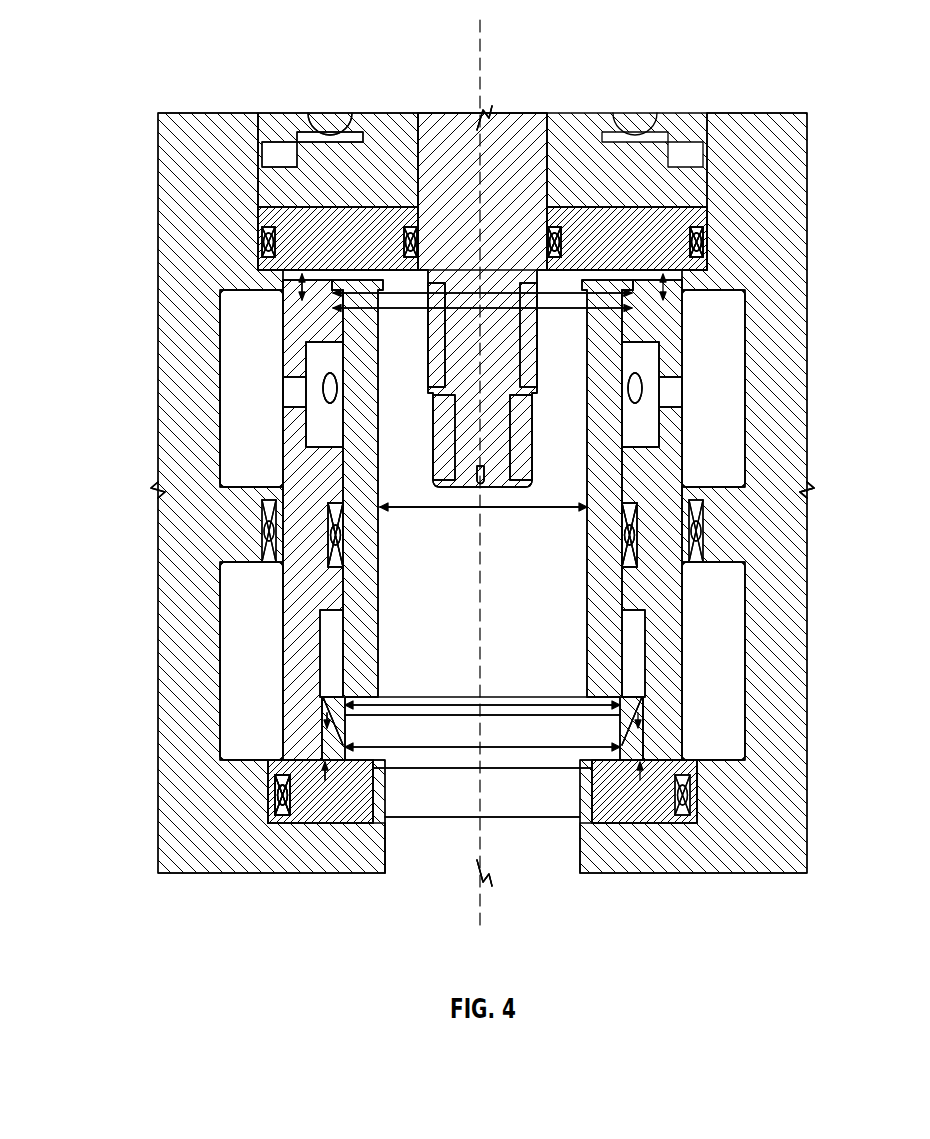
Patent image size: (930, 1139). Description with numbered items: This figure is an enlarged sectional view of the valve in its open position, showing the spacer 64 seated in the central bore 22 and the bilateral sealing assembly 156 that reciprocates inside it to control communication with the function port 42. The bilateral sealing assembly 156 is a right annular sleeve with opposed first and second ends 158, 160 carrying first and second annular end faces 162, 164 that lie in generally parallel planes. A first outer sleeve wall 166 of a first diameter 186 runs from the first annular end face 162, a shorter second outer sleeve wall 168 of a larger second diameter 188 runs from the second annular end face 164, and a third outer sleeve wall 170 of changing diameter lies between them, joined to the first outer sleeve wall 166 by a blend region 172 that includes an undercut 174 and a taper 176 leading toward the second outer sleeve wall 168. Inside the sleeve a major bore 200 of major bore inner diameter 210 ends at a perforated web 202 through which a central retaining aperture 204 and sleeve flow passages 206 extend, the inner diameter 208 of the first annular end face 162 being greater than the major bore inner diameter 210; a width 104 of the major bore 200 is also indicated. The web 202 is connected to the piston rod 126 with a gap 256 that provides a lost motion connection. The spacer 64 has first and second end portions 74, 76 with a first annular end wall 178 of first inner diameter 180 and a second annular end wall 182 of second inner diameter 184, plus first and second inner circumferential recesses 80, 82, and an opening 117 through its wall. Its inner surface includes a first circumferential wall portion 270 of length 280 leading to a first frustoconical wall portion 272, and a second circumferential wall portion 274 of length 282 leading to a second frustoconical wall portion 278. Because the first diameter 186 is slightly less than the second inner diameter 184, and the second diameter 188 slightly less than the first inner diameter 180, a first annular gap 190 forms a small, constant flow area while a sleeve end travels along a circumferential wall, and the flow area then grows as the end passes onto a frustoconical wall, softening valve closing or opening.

The central bore 22 is at (553, 745).
The function port 42 is at (520, 858).
The spacer 64 is at (352, 795).
The first end portion 74 is at (300, 280).
The second end portion 76 is at (368, 835).
The first inner circumferential recess 80 is at (318, 715).
The second inner circumferential recess 82 is at (325, 430).
The chamber diameter 104 is at (460, 508).
The port 117 is at (328, 387).
The piston rod 126 is at (628, 378).
The bilateral sealing assembly 156 is at (322, 697).
The first end 158 is at (320, 745).
The second end 160 is at (345, 205).
The first annular end face 162 is at (345, 717).
The second annular end face 164 is at (642, 270).
The first outer sleeve wall 166 is at (640, 706).
The second outer sleeve wall 168 is at (262, 232).
The third outer sleeve wall 170 is at (307, 343).
The blend region 172 is at (657, 346).
The undercut 174 is at (627, 306).
The gap 176 is at (637, 290).
The first annular end wall 178 is at (648, 268).
The first inner diameter 180 is at (417, 305).
The second annular end wall 182 is at (620, 712).
The second inner diameter 184 is at (577, 747).
The first diameter 186 is at (455, 697).
The second diameter 188 is at (497, 318).
The first annular gap 190 is at (662, 282).
The major bore 200 is at (410, 616).
The perforated web 202 is at (535, 505).
The central retaining aperture 204 is at (548, 265).
The sleeve flow passages 206 is at (343, 447).
The inner diameter of the first annular end face 208 is at (466, 770).
The major bore inner diameter 210 is at (392, 512).
The gap 256 is at (532, 395).
The first circumferential wall portion 270 is at (403, 825).
The first frustoconical wall portion 272 is at (663, 765).
The second circumferential wall portion 274 is at (660, 258).
The second frustoconical wall portion 278 is at (298, 293).
The length of first circumferential wall portion 280 is at (327, 768).
The length of second circumferential wall portion 282 is at (320, 268).